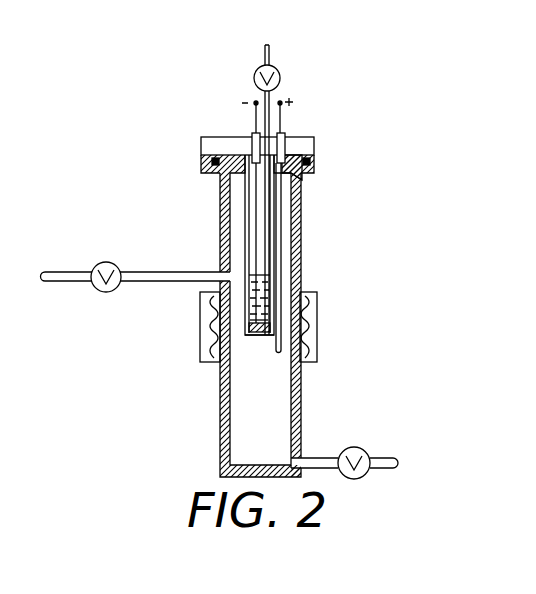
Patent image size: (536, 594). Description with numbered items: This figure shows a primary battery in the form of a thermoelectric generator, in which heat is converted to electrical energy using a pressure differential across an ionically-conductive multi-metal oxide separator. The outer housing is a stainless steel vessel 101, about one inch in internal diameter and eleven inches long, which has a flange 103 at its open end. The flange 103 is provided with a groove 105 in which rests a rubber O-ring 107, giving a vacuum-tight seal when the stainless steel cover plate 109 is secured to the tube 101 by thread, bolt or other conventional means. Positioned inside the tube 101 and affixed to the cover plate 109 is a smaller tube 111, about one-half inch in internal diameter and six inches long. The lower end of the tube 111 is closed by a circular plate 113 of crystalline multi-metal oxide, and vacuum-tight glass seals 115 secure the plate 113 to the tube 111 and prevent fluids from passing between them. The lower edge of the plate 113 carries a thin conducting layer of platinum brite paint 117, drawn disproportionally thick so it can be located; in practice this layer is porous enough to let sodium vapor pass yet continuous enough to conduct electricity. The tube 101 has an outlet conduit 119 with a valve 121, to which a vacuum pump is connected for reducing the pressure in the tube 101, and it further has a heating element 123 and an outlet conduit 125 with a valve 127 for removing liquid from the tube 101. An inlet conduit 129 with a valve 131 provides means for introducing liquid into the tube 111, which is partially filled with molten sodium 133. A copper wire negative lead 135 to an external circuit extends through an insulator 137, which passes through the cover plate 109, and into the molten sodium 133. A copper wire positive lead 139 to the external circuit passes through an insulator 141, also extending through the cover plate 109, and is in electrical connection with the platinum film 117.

The stainless steel vessel 101 is at (220, 442).
The flange 103 is at (317, 157).
The groove 105 is at (313, 167).
The rubber O-ring 107 is at (307, 177).
The stainless steel cover plate 109 is at (293, 137).
The smaller tube 111 is at (245, 205).
The circular plate 113 is at (250, 328).
The vacuum-tight glass seals 115 is at (250, 313).
The platinum brite paint layer 117 is at (255, 336).
The outlet conduit 119 is at (148, 285).
The valve 121 is at (100, 262).
The heating element 123 is at (317, 337).
The outlet conduit 125 is at (320, 458).
The valve 127 is at (358, 479).
The inlet conduit 129 is at (263, 57).
The valve 131 is at (277, 70).
The molten sodium 133 is at (265, 295).
The copper wire negative lead 135 is at (252, 117).
The insulator 137 is at (254, 147).
The copper wire positive lead 139 is at (283, 115).
The insulator 141 is at (297, 178).